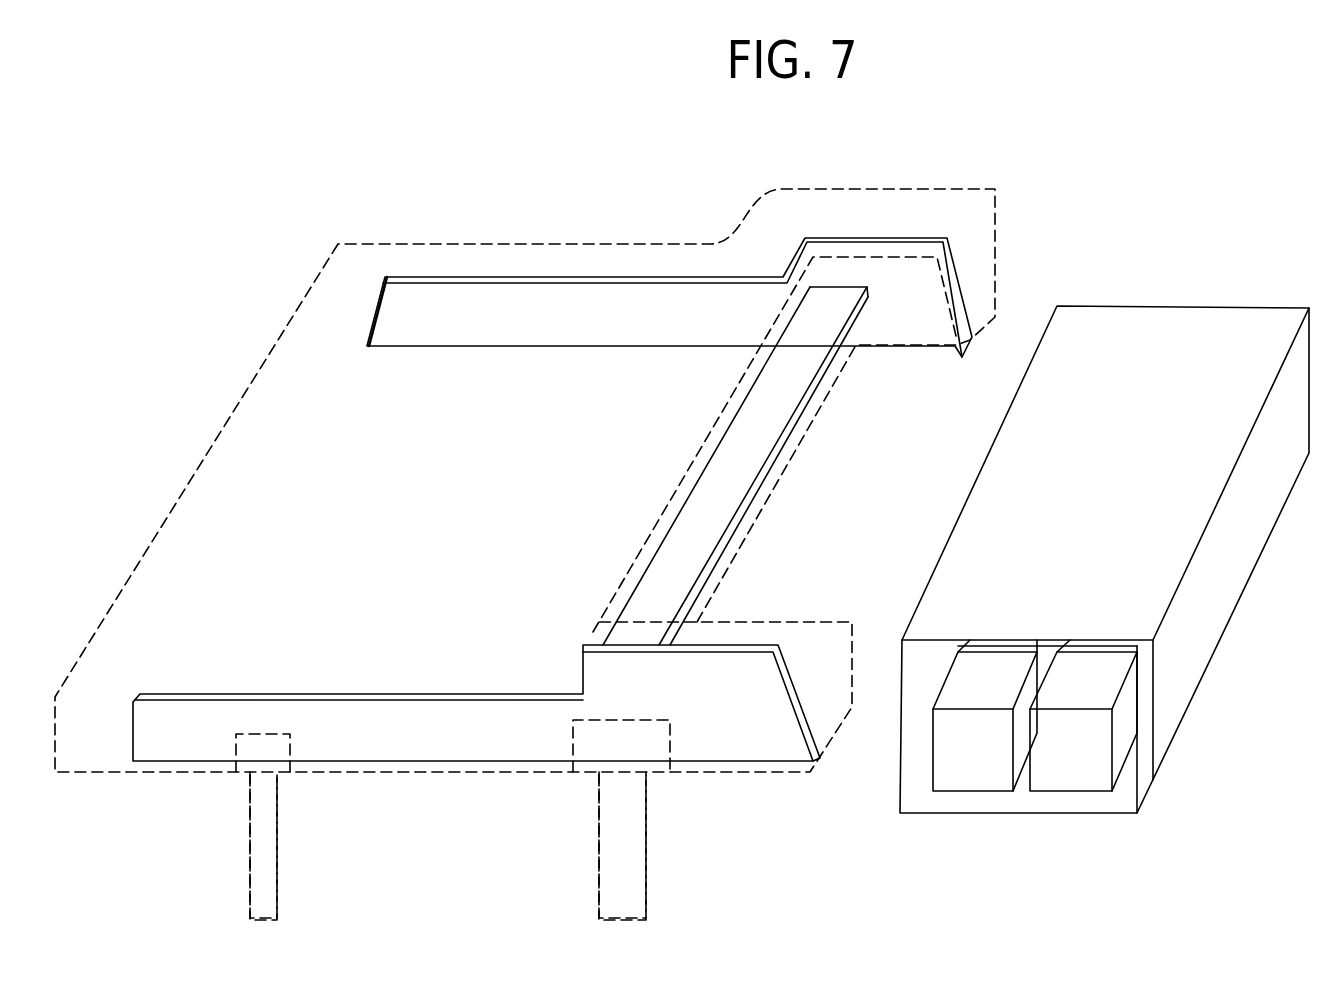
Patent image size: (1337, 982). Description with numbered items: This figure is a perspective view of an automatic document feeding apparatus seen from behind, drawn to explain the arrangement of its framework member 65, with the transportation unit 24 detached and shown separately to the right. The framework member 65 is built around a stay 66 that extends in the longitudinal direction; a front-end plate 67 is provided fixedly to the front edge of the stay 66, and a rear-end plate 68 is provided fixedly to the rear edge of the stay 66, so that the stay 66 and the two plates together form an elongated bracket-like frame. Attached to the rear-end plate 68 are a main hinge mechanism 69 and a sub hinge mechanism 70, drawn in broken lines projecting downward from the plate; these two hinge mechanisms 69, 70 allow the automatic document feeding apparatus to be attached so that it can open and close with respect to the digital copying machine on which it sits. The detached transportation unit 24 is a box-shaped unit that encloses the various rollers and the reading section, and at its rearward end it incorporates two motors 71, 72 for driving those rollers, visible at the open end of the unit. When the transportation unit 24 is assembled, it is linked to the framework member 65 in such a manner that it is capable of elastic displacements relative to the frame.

The transportation unit 24 is at (1104, 544).
The framework member 65 is at (552, 437).
The stay 66 is at (718, 497).
The front-end plate 67 is at (562, 326).
The rear-end plate 68 is at (422, 732).
The main hinge mechanism 69 is at (650, 748).
The sub hinge mechanism 70 is at (278, 767).
The motor 71 is at (1073, 762).
The motor 72 is at (973, 762).